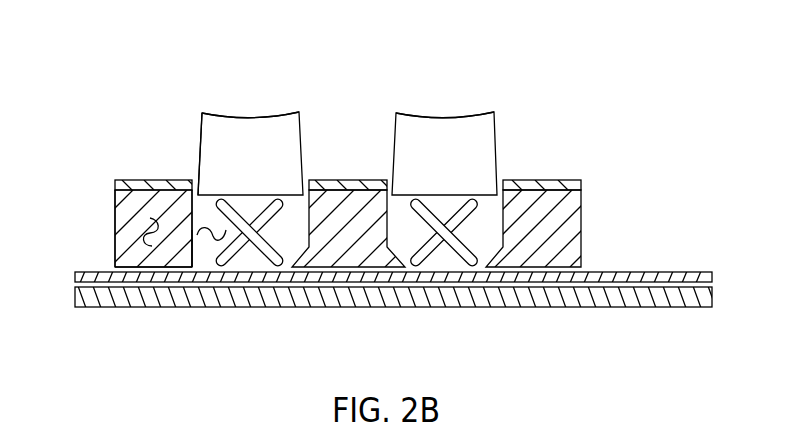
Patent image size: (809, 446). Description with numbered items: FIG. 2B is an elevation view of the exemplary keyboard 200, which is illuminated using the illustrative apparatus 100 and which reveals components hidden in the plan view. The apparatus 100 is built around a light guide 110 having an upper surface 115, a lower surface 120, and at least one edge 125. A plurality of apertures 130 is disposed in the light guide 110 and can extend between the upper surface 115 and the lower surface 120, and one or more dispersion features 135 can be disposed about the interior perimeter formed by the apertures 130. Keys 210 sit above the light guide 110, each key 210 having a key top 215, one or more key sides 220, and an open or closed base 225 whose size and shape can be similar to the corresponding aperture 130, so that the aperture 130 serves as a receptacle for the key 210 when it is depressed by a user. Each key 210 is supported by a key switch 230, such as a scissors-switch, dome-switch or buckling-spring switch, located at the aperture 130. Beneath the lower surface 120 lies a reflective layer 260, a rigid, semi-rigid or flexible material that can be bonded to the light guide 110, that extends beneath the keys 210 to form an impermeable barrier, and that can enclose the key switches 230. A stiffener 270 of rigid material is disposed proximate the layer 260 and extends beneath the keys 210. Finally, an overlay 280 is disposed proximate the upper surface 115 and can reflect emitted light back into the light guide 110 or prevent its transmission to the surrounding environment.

The apparatus for illuminating a user interface device 100 is at (567, 195).
The light guide 110 is at (150, 230).
The upper surface 115 is at (128, 190).
The lower surface 120 is at (135, 267).
The edge 125 is at (115, 203).
The aperture 130 is at (200, 240).
The dispersion feature 135 is at (296, 250).
The keyboard 200 is at (624, 56).
The key 210 is at (255, 104).
The key top 215 is at (218, 115).
The key side 220 is at (317, 111).
The key base 225 is at (193, 208).
The key switch 230 is at (262, 242).
The reflective layer 260 is at (660, 272).
The stiffener 270 is at (618, 307).
The overlay 280 is at (543, 179).